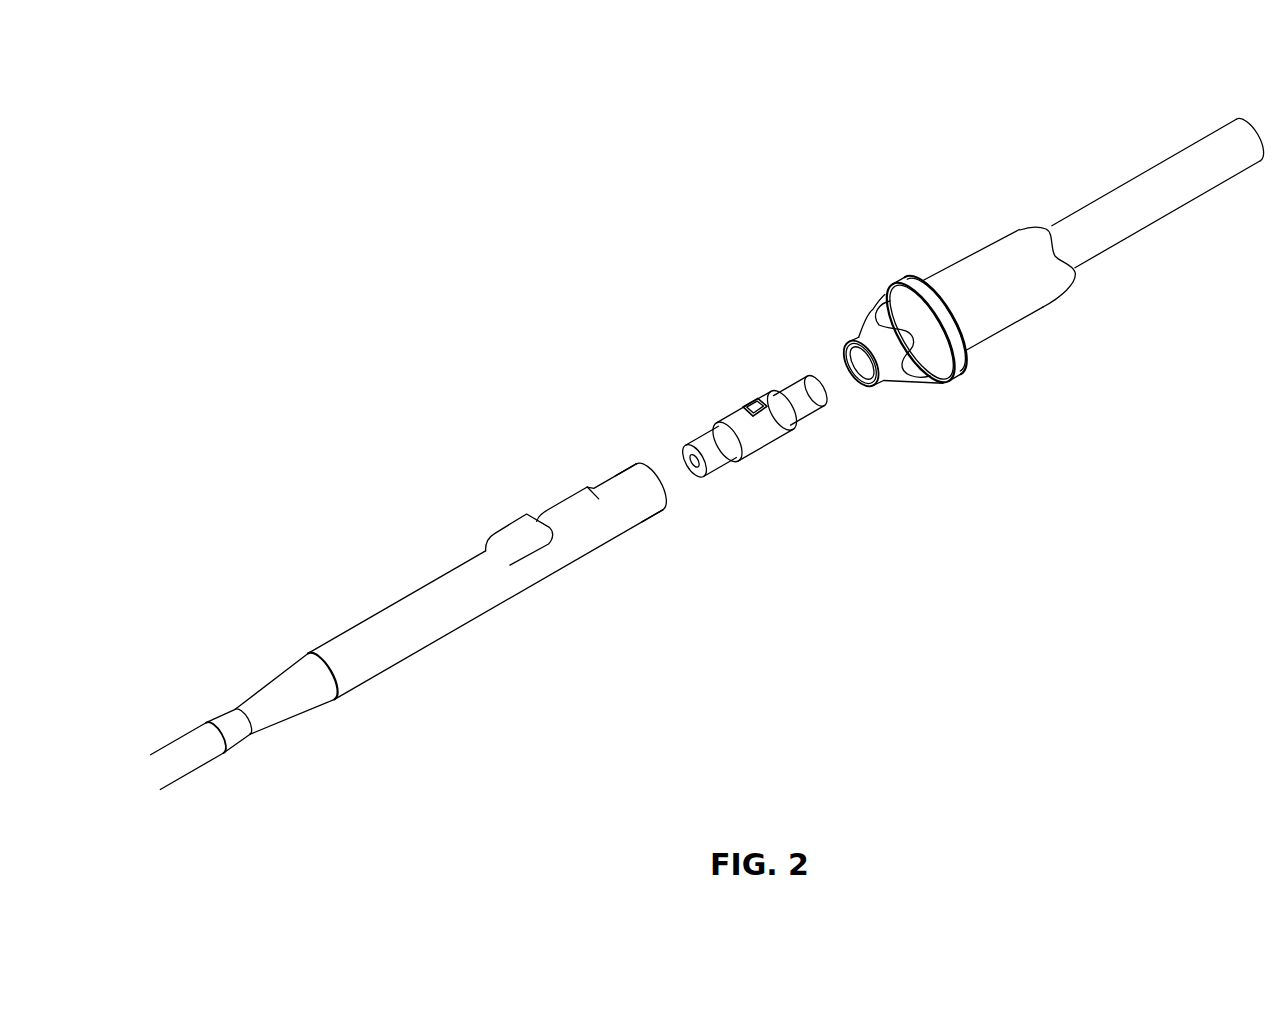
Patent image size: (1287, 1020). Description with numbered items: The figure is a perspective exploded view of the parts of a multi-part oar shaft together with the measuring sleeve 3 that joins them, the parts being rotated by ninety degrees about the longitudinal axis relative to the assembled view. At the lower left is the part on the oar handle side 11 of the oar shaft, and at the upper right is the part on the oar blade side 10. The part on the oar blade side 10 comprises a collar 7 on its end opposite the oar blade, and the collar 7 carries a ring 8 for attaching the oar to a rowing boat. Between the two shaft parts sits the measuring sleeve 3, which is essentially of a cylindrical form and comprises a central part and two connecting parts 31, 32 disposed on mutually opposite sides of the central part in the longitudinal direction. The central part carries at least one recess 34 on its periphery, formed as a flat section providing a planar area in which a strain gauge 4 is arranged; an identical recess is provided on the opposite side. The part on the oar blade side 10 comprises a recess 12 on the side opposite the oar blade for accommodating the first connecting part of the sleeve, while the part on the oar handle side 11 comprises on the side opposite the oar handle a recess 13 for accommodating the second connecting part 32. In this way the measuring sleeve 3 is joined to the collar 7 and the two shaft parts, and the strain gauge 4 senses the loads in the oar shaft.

The measuring sleeve 3 is at (783, 440).
The strain gauge 4 is at (748, 407).
The collar 7 is at (1020, 293).
The ring 8 is at (950, 357).
The part on the oar blade side 10 is at (1028, 243).
The part on the oar handle side 11 is at (338, 535).
The recess on the oar blade side 12 is at (860, 363).
The recess on the oar handle side 13 is at (660, 477).
The connecting part 31 is at (815, 400).
The second connecting part 32 is at (717, 463).
The recess 34 is at (747, 407).